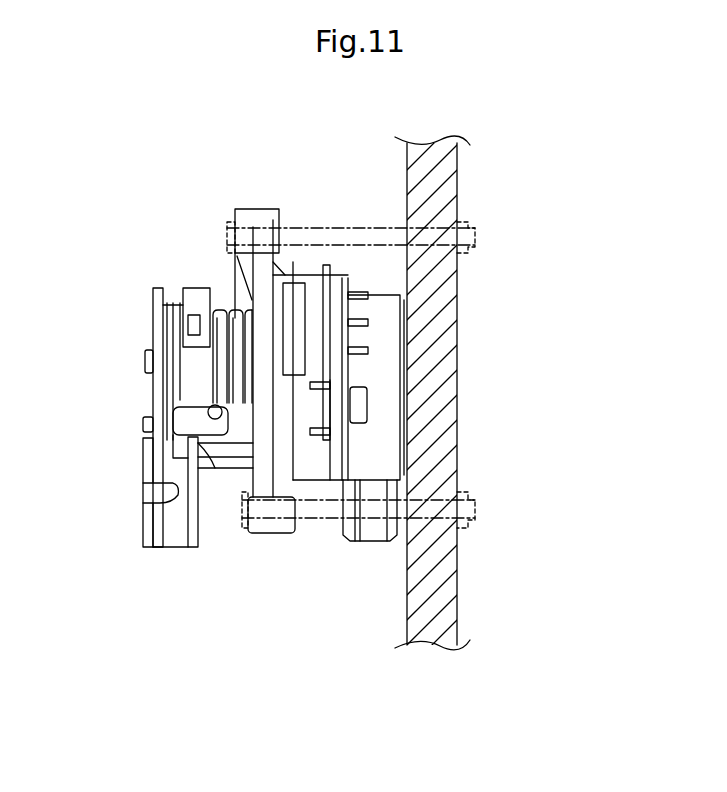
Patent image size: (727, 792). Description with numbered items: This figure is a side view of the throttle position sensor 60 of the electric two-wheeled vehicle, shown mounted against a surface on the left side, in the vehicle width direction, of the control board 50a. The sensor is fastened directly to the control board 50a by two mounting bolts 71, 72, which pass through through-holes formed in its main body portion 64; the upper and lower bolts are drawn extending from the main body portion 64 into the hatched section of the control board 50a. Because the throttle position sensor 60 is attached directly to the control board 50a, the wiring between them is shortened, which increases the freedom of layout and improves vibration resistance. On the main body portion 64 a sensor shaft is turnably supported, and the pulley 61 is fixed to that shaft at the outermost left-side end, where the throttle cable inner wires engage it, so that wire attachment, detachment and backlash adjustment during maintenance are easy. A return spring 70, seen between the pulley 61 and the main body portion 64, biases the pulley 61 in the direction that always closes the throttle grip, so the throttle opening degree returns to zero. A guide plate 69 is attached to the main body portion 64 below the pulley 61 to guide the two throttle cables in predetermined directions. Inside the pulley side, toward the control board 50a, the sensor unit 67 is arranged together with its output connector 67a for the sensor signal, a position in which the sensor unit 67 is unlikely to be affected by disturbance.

The control board 50a is at (405, 170).
The throttle position sensor 60 is at (190, 168).
The pulley 61 is at (155, 322).
The main body portion 64 is at (250, 217).
The sensor unit 67 is at (384, 300).
The output connector 67a is at (368, 541).
The guide plate 69 is at (170, 540).
The return spring 70 is at (218, 300).
The mounting bolt 71 is at (310, 222).
The mounting bolt 72 is at (310, 540).